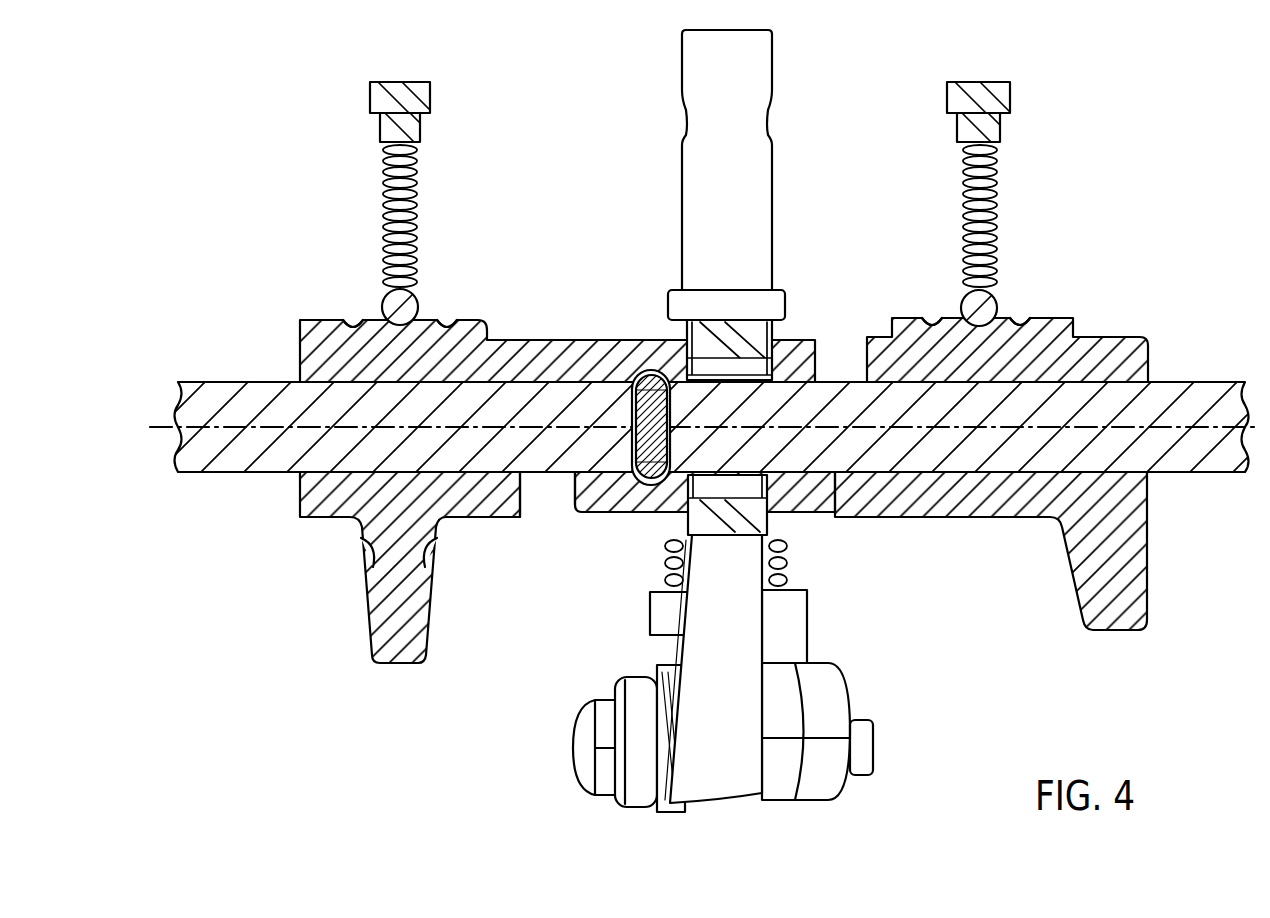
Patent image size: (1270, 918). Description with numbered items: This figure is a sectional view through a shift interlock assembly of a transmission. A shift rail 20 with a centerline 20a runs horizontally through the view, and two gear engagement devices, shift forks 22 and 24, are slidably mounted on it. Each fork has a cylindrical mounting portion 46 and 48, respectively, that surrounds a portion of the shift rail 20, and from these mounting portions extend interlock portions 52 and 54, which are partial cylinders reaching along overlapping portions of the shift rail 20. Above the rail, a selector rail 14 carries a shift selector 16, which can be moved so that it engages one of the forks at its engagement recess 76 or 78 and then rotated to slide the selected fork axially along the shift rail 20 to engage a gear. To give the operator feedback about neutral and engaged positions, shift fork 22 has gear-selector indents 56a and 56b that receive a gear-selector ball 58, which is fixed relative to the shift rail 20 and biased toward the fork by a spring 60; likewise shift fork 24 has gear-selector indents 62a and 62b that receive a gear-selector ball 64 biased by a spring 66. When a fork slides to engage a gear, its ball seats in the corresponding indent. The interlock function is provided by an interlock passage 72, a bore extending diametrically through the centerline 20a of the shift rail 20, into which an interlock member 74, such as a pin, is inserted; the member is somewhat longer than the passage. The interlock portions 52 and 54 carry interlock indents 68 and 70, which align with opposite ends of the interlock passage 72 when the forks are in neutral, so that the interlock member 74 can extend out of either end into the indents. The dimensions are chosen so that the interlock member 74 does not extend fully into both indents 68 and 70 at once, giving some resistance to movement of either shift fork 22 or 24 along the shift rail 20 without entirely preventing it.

The selector rail 14 is at (692, 188).
The shift selector 16 is at (738, 598).
The shift rail 20 is at (252, 392).
The centerline 20a is at (290, 425).
The shift fork 22 is at (499, 426).
The shift fork 24 is at (1022, 447).
The cylindrical mounting portion 46 is at (313, 345).
The cylindrical mounting portion 48 is at (1060, 345).
The interlock portion 52 is at (627, 353).
The interlock portion 54 is at (652, 502).
The gear-selector indent 56a is at (353, 323).
The gear-selector indent 56b is at (447, 323).
The gear-selector ball 58 is at (418, 297).
The spring 60 is at (417, 180).
The gear-selector indent 62a is at (932, 323).
The gear-selector indent 62b is at (1023, 327).
The gear-selector ball 64 is at (962, 300).
The spring 66 is at (958, 178).
The interlock indent 68 is at (651, 370).
The interlock indent 70 is at (643, 470).
The interlock passage 72 is at (630, 420).
The interlock member 74 is at (579, 505).
The engagement recess 76 is at (775, 345).
The engagement recess 78 is at (768, 482).